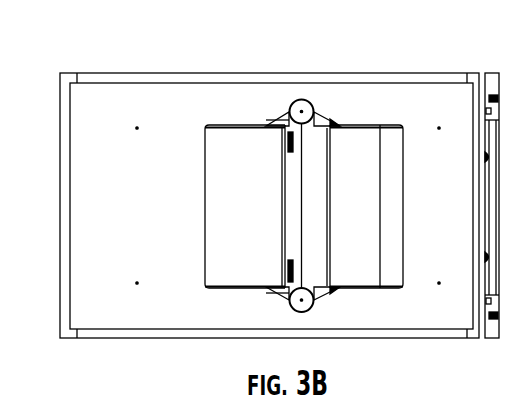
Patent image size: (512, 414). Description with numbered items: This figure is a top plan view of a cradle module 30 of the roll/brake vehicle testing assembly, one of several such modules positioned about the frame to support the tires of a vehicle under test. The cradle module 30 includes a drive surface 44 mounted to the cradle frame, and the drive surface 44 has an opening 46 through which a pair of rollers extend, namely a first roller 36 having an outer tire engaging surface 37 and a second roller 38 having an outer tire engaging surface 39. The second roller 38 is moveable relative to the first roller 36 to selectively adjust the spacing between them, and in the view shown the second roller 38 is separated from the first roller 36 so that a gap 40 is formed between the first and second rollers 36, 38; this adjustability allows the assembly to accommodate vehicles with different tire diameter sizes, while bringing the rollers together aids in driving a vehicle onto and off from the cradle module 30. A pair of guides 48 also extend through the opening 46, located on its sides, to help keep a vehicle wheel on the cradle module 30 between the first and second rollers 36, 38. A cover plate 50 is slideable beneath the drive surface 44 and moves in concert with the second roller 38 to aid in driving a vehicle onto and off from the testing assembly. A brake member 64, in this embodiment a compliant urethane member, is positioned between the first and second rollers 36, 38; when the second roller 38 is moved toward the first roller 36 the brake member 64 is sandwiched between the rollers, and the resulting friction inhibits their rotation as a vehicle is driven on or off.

The cradle module 30 is at (145, 70).
The first roller 36 is at (218, 147).
The outer tire engaging surface 37 is at (227, 172).
The second roller 38 is at (347, 192).
The outer tire engaging surface 39 is at (382, 203).
The gap 40 is at (313, 148).
The drive surface 44 is at (115, 215).
The opening 46 is at (205, 260).
The guides 48 is at (296, 102).
The cover plate 50 is at (367, 281).
The brake member 64 is at (290, 142).